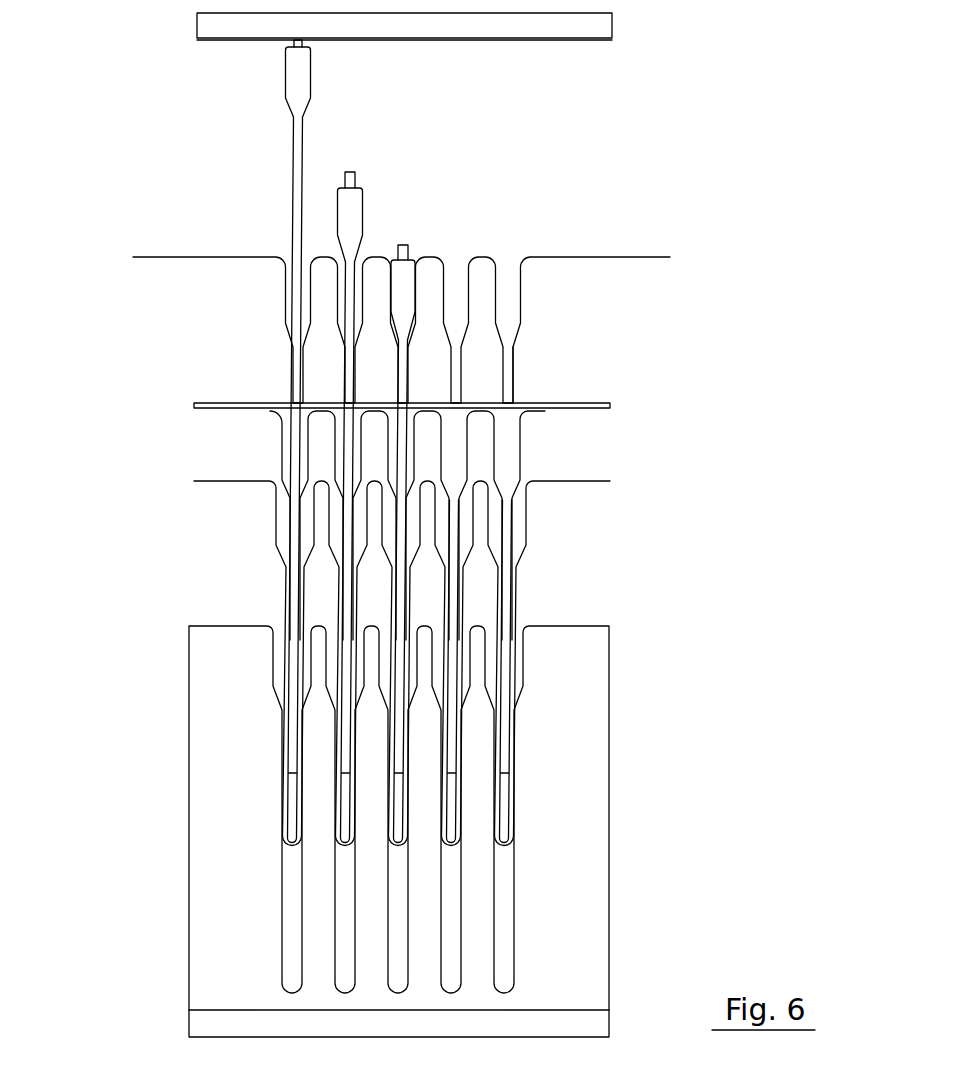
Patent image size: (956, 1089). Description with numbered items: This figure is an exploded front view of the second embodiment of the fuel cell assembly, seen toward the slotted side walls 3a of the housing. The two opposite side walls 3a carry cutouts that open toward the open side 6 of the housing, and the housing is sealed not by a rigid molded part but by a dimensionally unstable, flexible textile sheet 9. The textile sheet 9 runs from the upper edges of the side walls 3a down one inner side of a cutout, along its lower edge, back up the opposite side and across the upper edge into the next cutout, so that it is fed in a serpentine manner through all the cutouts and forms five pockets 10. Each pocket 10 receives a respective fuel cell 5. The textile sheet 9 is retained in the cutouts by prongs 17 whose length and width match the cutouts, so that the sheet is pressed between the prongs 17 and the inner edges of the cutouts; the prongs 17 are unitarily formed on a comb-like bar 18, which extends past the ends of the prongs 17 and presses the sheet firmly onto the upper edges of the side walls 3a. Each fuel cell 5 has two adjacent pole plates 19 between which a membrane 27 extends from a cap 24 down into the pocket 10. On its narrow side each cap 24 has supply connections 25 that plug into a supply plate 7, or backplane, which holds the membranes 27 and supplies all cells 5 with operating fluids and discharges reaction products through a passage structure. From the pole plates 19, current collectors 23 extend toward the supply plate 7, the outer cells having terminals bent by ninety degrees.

The supply plate 7 is at (596, 25).
The cap 24 is at (297, 80).
The supply connections 25 is at (347, 181).
The membrane 27 is at (296, 212).
The current collector 23 is at (616, 260).
The fuel cell 5 is at (272, 364).
The pole plates 19 is at (512, 365).
The bar 18 is at (580, 407).
The prongs 17 is at (510, 438).
The textile sheet 9 is at (575, 483).
The pocket 10 is at (340, 540).
The open side 6 is at (567, 613).
The side walls 3a is at (570, 748).